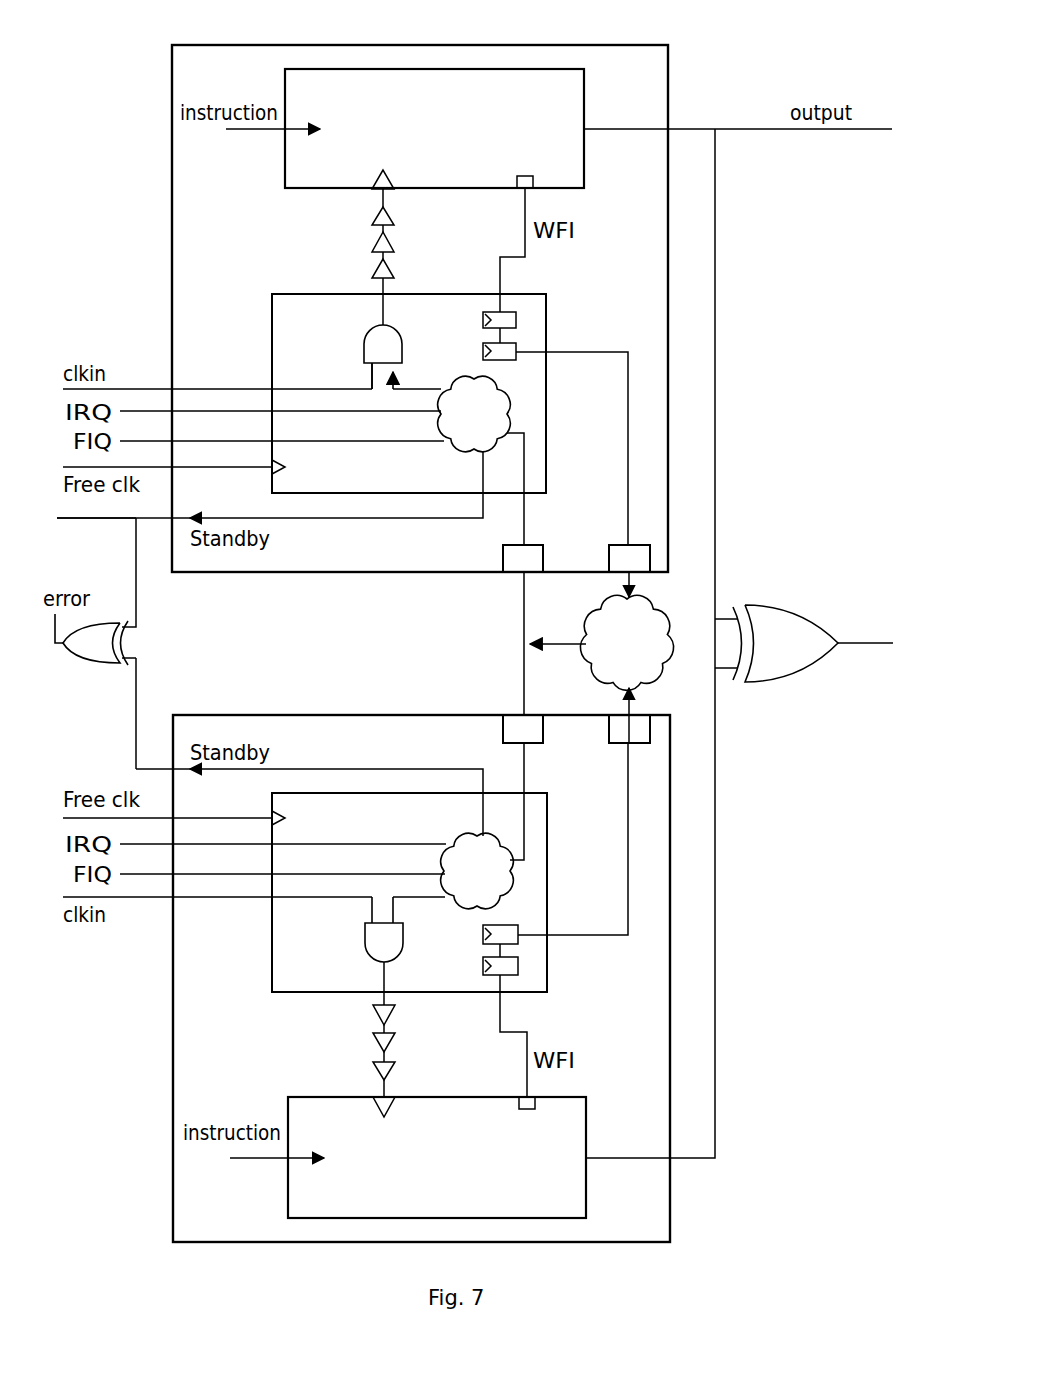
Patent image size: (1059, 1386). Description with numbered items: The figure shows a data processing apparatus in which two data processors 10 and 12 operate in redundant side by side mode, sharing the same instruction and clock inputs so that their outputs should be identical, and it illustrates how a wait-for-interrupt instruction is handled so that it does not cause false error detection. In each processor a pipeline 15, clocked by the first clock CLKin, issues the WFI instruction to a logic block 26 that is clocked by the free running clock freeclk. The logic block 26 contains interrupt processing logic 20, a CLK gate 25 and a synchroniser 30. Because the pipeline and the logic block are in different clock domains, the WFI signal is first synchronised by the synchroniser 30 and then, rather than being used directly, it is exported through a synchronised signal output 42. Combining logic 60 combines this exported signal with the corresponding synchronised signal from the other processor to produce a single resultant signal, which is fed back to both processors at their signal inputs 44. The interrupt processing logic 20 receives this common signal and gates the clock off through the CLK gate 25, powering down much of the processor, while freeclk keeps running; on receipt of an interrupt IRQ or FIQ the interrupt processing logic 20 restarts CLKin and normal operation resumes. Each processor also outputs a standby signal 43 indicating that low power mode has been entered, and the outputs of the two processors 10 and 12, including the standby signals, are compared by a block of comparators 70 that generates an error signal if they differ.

The data processor 10 is at (668, 58).
The data processor 12 is at (670, 1197).
The pipeline 15 is at (584, 98).
The interrupt processing logic 20 is at (470, 452).
The CLK gate 25 is at (402, 342).
The logic block 26 is at (547, 308).
The synchroniser 30 is at (522, 360).
The synchronised signal output 42 is at (615, 568).
The standby signal 43 is at (72, 519).
The signal input 44 is at (512, 567).
The combining logic 60 is at (602, 642).
The comparators 70 is at (804, 643).